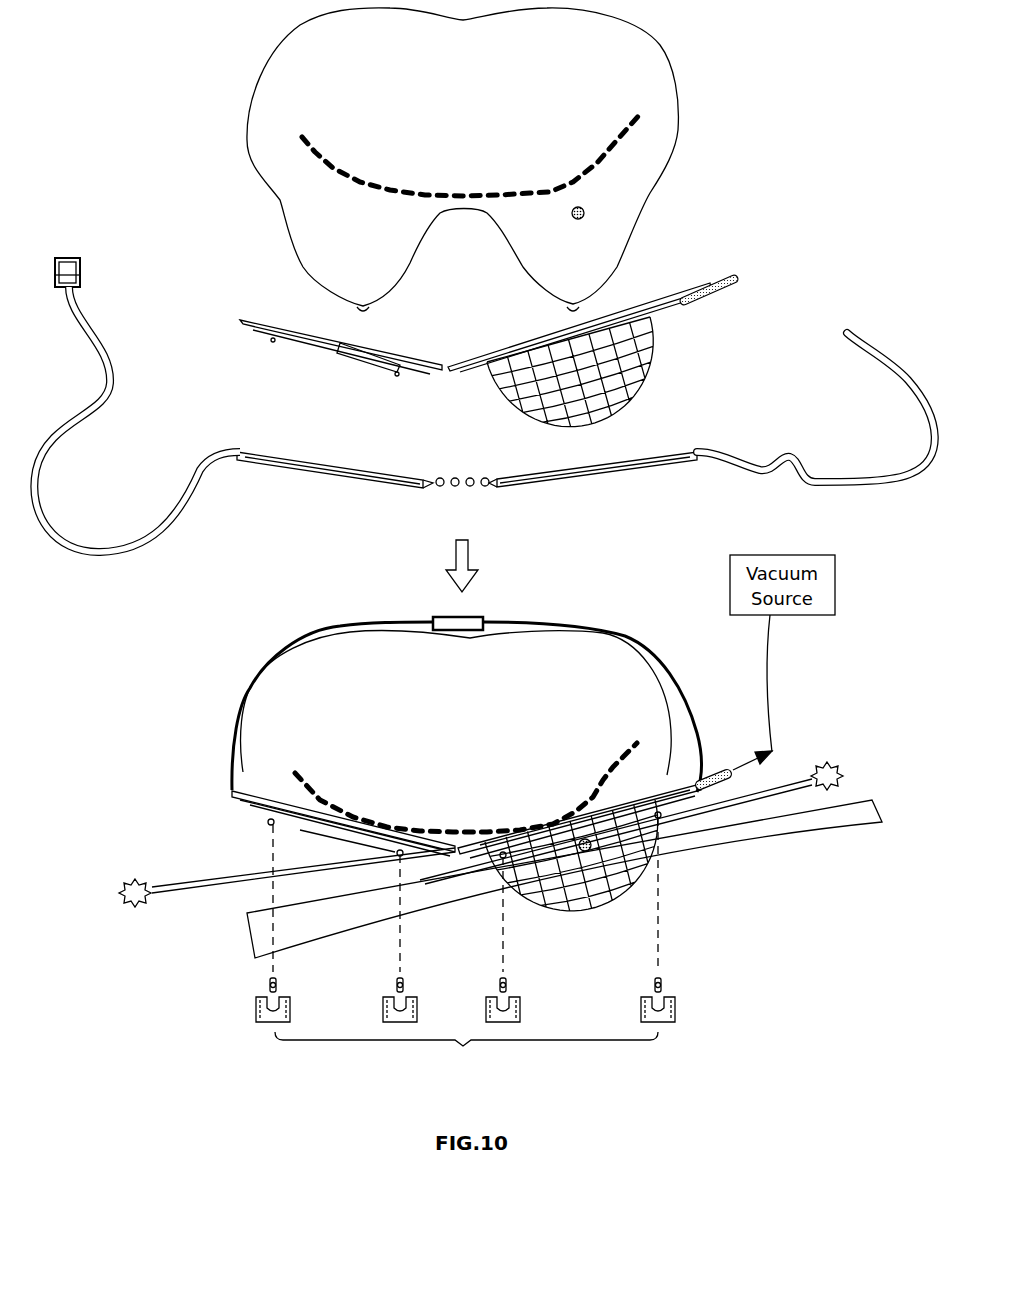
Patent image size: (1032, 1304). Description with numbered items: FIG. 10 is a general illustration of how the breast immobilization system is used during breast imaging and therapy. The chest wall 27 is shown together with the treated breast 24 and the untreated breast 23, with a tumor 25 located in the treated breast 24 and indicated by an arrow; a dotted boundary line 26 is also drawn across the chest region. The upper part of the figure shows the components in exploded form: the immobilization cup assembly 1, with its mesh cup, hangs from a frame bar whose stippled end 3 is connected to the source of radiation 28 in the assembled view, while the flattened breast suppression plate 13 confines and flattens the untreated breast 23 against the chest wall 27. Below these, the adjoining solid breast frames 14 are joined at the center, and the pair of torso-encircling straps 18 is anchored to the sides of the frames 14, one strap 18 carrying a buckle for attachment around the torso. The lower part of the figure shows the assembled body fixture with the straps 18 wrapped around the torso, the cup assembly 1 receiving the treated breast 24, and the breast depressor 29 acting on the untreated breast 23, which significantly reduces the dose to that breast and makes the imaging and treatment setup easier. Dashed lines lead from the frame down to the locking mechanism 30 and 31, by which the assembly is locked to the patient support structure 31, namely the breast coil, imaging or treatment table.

The cup assembly 1 is at (640, 383).
The frame bar with vacuum port tip 3 is at (737, 283).
The breast suppression plate 13 is at (277, 368).
The breast frame 14 is at (548, 470).
The torso-encircling strap 18 is at (182, 500).
The untreated breast 23 is at (323, 248).
The treated breast 24 is at (573, 255).
The tumor 25 is at (597, 208).
The dotted boundary line 26 is at (312, 151).
The chest wall 27 is at (323, 76).
The source of radiation 28 is at (120, 893).
The breast depressor 29 is at (271, 822).
The locking mechanism 30 is at (245, 995).
The patient support structure 31 is at (300, 1072).